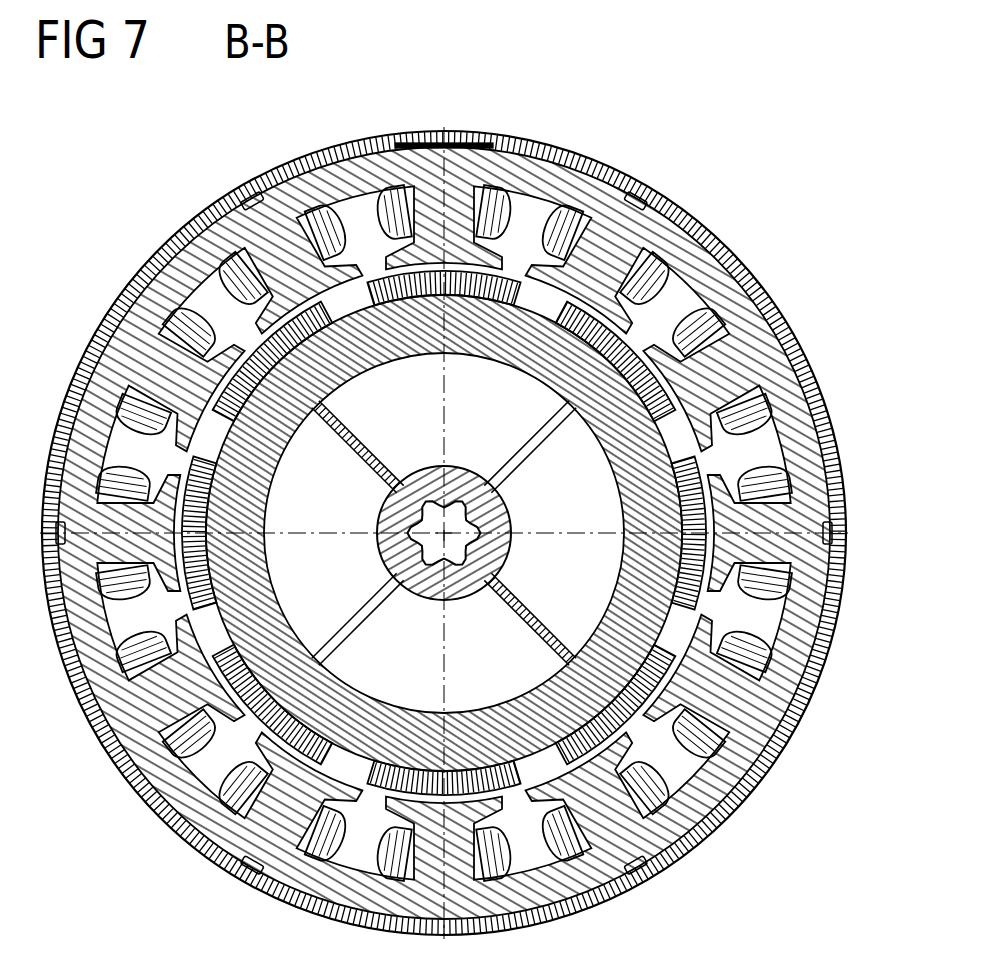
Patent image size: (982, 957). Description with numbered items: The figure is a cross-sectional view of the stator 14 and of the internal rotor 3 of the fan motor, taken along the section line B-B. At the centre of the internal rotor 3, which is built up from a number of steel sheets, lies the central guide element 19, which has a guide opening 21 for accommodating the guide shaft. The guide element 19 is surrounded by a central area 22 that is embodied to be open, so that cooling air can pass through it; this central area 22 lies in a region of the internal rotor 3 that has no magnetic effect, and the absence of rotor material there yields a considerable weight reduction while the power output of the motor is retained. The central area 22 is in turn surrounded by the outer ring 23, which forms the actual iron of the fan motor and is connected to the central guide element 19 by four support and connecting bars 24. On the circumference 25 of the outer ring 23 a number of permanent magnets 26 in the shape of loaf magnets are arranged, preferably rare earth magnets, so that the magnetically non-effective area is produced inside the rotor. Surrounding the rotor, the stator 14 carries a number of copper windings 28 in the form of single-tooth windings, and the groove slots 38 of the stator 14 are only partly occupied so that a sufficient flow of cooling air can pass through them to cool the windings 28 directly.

The stator 14 is at (763, 767).
The copper windings 28 is at (127, 407).
The groove slots 38 is at (763, 440).
The permanent magnets 26 is at (405, 780).
The internal rotor 3 is at (627, 623).
The circumference 25 is at (220, 630).
The outer ring 23 is at (490, 705).
The support and connecting bars 24 is at (340, 447).
The central guide element 19 is at (470, 470).
The guide opening 21 is at (475, 520).
The central area 22 is at (406, 445).